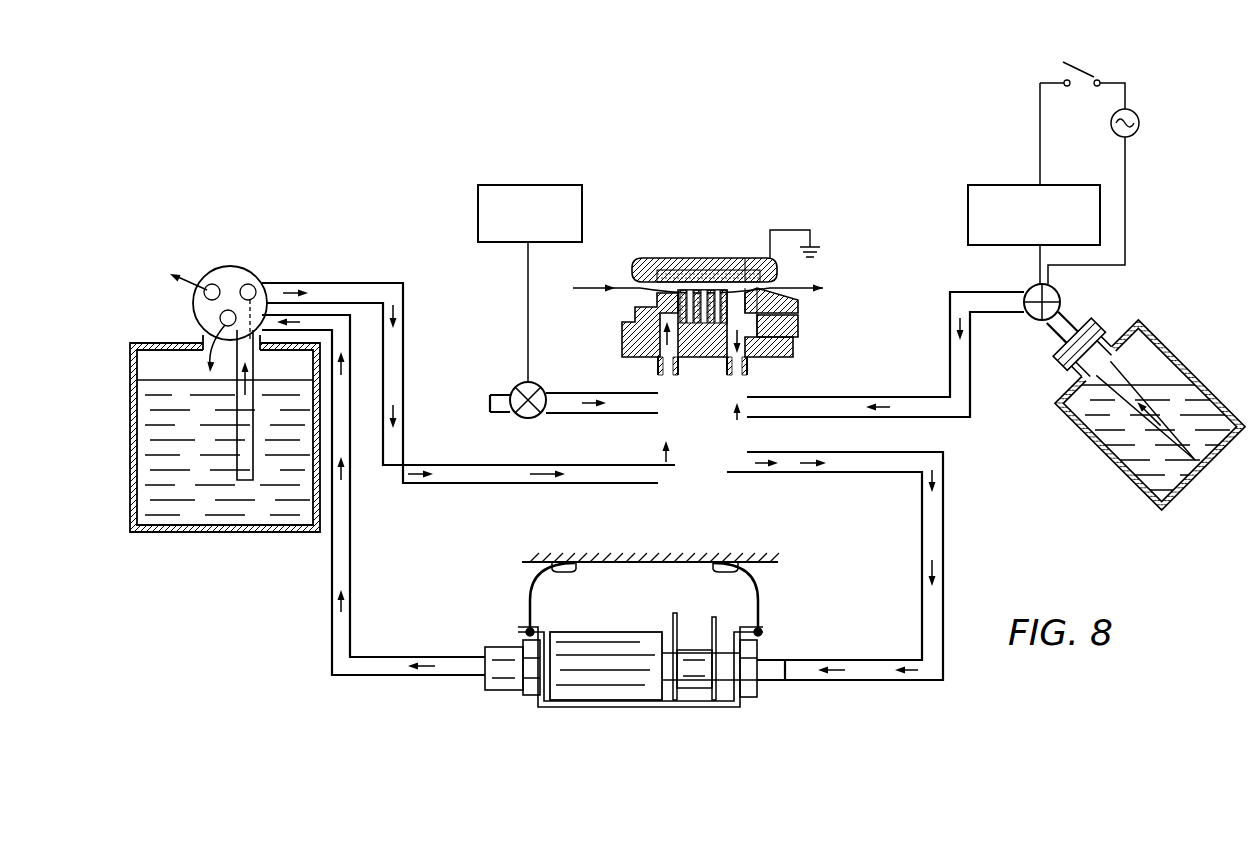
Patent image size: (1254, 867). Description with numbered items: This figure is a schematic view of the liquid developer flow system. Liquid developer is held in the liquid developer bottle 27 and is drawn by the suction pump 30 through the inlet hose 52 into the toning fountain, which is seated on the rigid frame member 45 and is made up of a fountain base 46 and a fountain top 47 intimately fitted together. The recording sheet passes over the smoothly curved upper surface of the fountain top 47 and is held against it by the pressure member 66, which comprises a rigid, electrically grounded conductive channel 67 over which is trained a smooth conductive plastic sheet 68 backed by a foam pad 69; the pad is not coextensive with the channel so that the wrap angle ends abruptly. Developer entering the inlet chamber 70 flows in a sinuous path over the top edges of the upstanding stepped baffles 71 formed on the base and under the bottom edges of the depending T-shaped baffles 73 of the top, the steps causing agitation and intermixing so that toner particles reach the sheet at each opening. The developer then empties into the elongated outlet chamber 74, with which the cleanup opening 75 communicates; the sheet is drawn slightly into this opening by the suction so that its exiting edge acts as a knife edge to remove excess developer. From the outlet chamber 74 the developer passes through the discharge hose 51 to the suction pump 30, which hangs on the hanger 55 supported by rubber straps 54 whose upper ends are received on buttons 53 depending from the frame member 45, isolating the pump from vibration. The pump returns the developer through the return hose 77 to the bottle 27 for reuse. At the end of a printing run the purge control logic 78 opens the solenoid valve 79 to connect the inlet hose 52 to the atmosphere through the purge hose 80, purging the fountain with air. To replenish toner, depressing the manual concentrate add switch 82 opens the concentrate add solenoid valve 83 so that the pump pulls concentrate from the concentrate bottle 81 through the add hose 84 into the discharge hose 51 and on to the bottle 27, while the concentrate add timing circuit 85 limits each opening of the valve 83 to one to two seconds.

The liquid developer bottle 27 is at (235, 531).
The suction pump 30 is at (618, 688).
The frame member 45 is at (672, 560).
The fountain base 46 is at (793, 357).
The fountain top 47 is at (800, 305).
The discharge hose 51 is at (727, 440).
The inlet hose 52 is at (668, 427).
The buttons 53 is at (565, 572).
The rubber straps 54 is at (528, 598).
The hanger 55 is at (745, 693).
The pressure member 66 is at (711, 296).
The conductive channel 67 is at (632, 268).
The conductive plastic sheet 68 is at (745, 268).
The foam pad 69 is at (677, 272).
The inlet chamber 70 is at (622, 326).
The upstanding stepped baffles 71 is at (690, 352).
The T-shaped baffles 73 is at (688, 265).
The outlet chamber 74 is at (790, 327).
The cleanup opening 75 is at (752, 296).
The return hose 77 is at (420, 662).
The purge control logic 78 is at (478, 212).
The solenoid valve 79 is at (517, 384).
The purge hose 80 is at (578, 393).
The concentrate bottle 81 is at (1200, 378).
The manual concentrate add switch 82 is at (1082, 80).
The concentrate add solenoid valve 83 is at (1060, 290).
The add hose 84 is at (876, 395).
The concentrate add timing circuit 85 is at (995, 185).